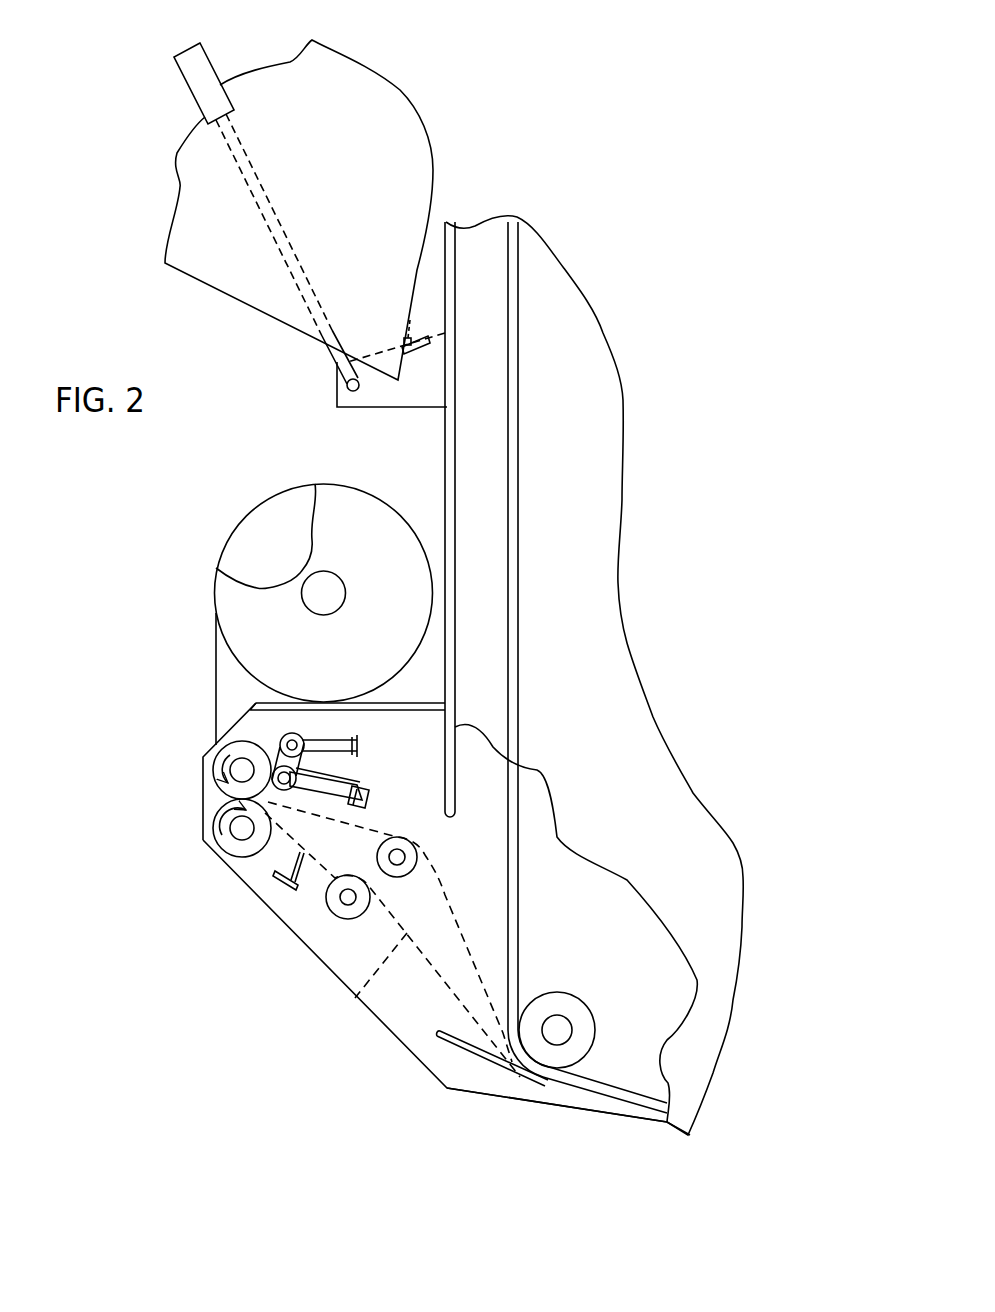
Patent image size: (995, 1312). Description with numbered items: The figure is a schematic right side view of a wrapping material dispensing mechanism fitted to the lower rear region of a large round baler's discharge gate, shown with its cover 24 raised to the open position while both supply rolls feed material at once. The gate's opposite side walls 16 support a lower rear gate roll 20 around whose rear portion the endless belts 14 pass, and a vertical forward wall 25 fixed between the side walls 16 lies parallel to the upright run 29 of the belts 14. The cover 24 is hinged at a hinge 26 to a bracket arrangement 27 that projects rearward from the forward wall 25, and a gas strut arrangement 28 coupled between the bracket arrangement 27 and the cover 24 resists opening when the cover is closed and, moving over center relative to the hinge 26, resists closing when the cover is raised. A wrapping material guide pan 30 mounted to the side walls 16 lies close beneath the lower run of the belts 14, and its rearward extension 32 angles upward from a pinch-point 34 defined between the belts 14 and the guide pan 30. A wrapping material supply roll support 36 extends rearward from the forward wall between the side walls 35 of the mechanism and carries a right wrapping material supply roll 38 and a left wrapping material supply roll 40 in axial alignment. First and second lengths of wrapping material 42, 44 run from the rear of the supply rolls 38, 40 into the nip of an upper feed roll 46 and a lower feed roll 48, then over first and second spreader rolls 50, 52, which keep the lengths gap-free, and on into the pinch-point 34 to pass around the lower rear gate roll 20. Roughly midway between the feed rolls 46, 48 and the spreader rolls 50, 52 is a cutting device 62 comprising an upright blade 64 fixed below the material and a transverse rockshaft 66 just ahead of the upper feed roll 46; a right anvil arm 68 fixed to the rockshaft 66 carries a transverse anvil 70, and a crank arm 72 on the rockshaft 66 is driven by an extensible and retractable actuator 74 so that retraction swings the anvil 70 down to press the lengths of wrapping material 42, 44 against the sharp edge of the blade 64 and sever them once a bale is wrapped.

The endless belts 14 is at (517, 520).
The side walls 16 is at (571, 705).
The lower rear gate roll 20 is at (578, 1003).
The cover 24 is at (420, 99).
The vertical forward wall 25 is at (447, 458).
The hinge 26 is at (418, 328).
The bracket arrangement 27 is at (405, 408).
The gas strut arrangement 28 is at (183, 88).
The upright run 29 is at (520, 545).
The wrapping material guide pan 30 is at (617, 1108).
The rearward extension 32 is at (463, 1047).
The pinch-point 34 is at (487, 1013).
The side walls 35 is at (394, 1010).
The wrapping material supply roll support 36 is at (358, 712).
The right wrapping material supply roll 38 is at (328, 492).
The left wrapping material supply roll 40 is at (257, 550).
The first length of wrapping material 42 is at (355, 998).
The second length of wrapping material 44 is at (445, 880).
The upper feed roll 46 is at (253, 740).
The lower feed roll 48 is at (228, 853).
The first spreader roll 50 is at (337, 919).
The second spreader roll 52 is at (403, 877).
The cutting device 62 is at (375, 785).
The upright blade 64 is at (270, 878).
The transverse rockshaft 66 is at (300, 772).
The right anvil arm 68 is at (372, 782).
The transverse anvil 70 is at (372, 800).
The crank arm 72 is at (302, 735).
The extensible and retractable actuator 74 is at (343, 735).